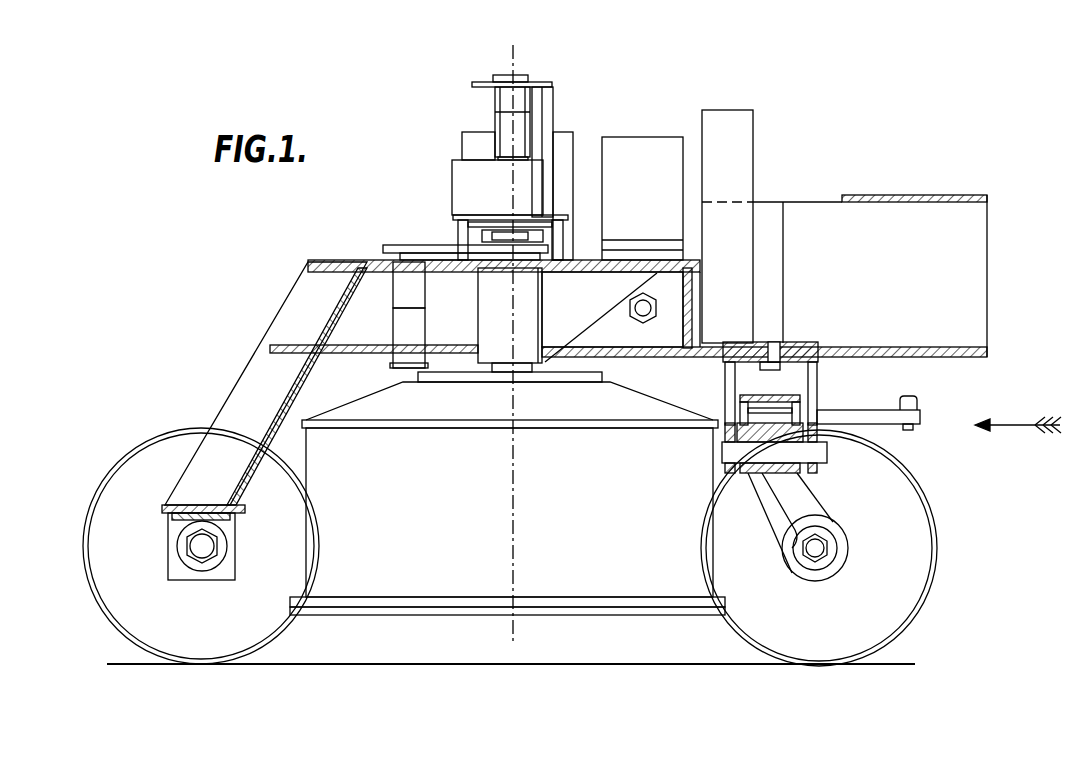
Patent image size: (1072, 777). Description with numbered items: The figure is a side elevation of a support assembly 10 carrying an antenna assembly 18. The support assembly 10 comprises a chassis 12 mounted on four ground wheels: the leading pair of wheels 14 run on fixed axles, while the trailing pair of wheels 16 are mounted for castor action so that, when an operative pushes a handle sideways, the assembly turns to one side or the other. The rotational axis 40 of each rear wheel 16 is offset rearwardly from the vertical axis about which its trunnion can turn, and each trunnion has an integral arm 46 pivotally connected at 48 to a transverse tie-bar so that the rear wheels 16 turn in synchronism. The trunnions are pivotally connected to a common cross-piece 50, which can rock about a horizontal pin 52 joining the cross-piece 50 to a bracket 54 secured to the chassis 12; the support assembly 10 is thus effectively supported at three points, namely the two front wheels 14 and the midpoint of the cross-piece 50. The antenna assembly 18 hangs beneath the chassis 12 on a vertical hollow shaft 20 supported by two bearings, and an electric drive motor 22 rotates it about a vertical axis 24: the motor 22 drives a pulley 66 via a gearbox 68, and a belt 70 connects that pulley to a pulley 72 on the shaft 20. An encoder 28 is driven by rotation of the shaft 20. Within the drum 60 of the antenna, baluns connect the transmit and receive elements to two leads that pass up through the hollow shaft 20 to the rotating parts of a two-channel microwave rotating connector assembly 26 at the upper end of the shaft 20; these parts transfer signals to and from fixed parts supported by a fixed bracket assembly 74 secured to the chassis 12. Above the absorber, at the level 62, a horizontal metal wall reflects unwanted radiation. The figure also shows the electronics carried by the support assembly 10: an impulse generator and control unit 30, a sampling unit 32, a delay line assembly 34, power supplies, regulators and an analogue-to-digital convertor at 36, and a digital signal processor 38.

The support assembly 10 is at (232, 378).
The chassis 12 is at (612, 300).
The leading pair of ground wheels 14 is at (136, 460).
The trailing pair of ground wheels 16 is at (888, 476).
The antenna assembly 18 is at (372, 624).
The vertical hollow shaft 20 is at (526, 372).
The electric drive motor 22 is at (408, 335).
The vertical axis 24 is at (518, 553).
The two-channel microwave rotating connector assembly 26 is at (500, 99).
The encoder 28 is at (470, 181).
The impulse generator and control unit 30 is at (476, 143).
The sampling unit 32 is at (632, 140).
The delay line assembly 34 is at (626, 262).
The power supplies, regulators and analogue-to-digital convertor 36 is at (735, 124).
The digital signal processor 38 is at (845, 240).
The rotational axis of rear wheel 40 is at (809, 556).
The integral arm 46 is at (872, 395).
The pivot connection 48 is at (925, 402).
The cross-piece 50 is at (722, 437).
The horizontal pin 52 is at (738, 450).
The bracket 54 is at (742, 378).
The drum 60 is at (422, 534).
The level of reflector wall 62 is at (398, 430).
The pulley 66 is at (396, 246).
The gearbox 68 is at (402, 290).
The belt 70 is at (446, 246).
The pulley 72 is at (498, 268).
The fixed bracket assembly 74 is at (552, 101).